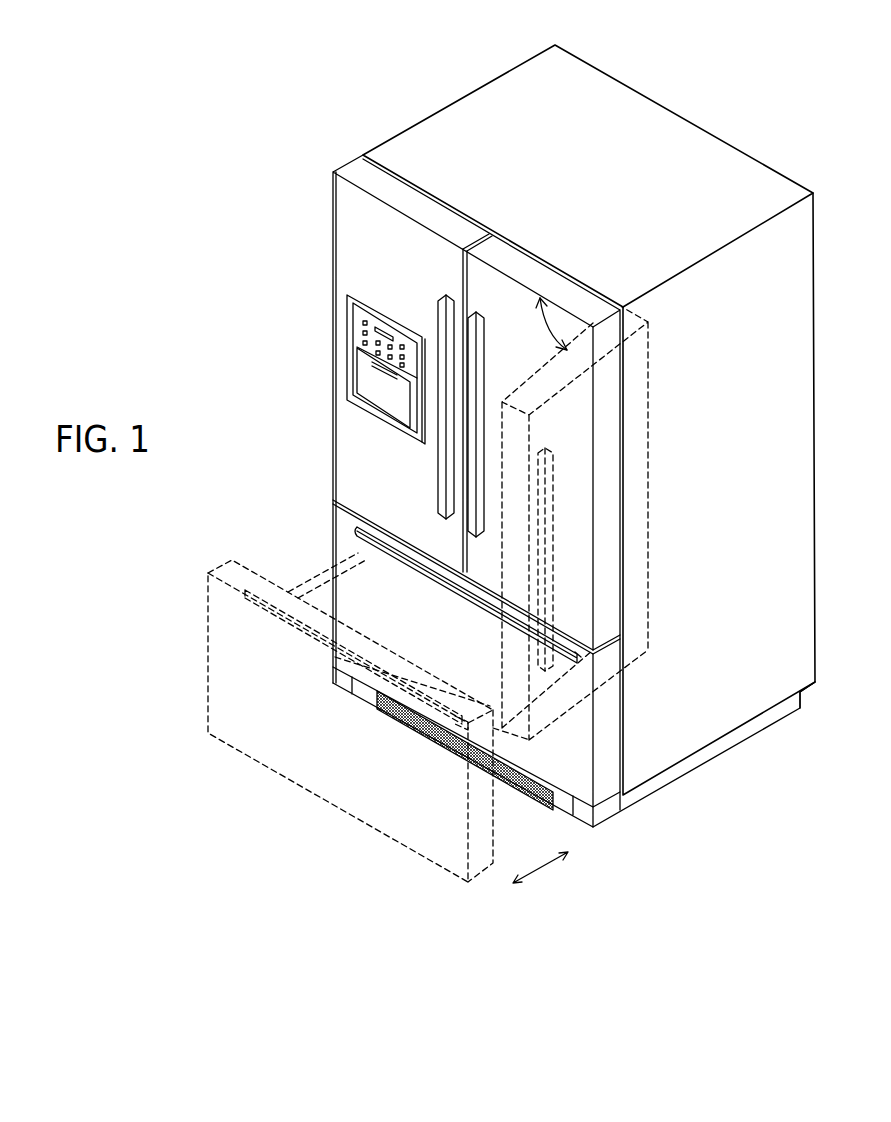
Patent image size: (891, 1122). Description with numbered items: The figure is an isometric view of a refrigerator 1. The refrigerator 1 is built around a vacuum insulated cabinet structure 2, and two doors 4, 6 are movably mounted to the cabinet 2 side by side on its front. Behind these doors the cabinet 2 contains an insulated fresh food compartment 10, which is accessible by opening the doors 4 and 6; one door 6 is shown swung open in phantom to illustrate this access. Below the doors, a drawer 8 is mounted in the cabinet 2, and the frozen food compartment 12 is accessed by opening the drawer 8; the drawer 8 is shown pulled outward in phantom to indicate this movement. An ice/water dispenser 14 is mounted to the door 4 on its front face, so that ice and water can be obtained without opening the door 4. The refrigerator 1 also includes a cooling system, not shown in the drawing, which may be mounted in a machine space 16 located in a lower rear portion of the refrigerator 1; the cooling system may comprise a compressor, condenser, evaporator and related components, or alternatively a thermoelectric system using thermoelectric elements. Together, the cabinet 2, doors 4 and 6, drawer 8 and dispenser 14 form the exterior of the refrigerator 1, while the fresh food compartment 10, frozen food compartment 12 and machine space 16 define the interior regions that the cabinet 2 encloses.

The refrigerator 1 is at (770, 137).
The vacuum insulated cabinet structure 2 is at (805, 368).
The door 4 is at (342, 243).
The door 6 is at (584, 563).
The drawer 8 is at (587, 770).
The fresh food compartment 10 is at (732, 305).
The frozen food compartment 12 is at (670, 745).
The ice/water dispenser 14 is at (348, 345).
The machine space 16 is at (817, 658).